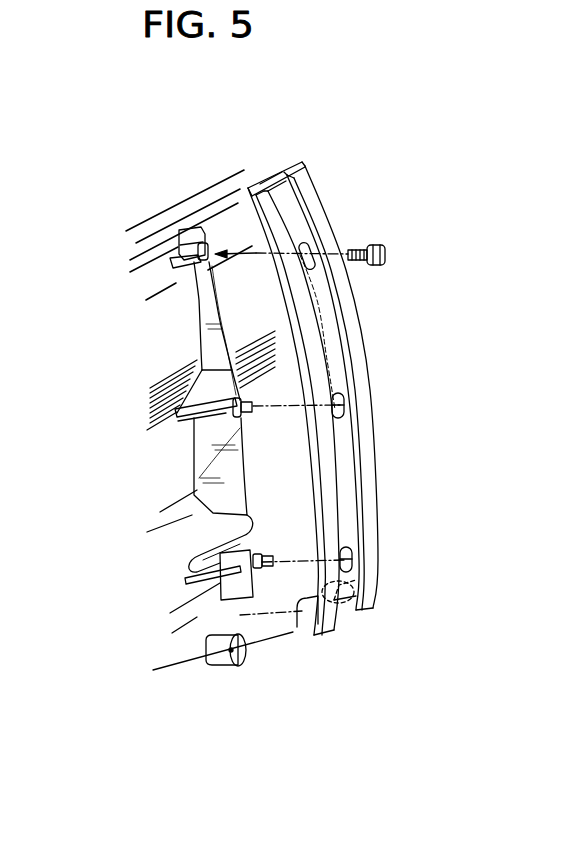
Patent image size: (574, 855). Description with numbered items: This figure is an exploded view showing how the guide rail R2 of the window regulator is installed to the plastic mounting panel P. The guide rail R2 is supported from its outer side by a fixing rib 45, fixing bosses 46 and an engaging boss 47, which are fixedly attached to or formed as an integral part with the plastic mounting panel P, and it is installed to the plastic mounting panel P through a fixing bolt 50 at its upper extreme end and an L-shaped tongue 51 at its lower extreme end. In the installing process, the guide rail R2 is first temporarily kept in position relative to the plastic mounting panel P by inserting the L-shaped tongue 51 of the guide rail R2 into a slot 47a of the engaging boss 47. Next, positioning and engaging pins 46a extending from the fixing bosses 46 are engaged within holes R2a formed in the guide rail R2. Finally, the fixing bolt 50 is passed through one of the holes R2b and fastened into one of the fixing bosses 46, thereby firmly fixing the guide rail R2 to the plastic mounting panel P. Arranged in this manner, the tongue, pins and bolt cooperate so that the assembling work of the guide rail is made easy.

The plastic mounting panel P is at (197, 202).
The guide rail R2 is at (312, 182).
The holes R2a is at (345, 402).
The holes R2b is at (308, 250).
The fixing rib 45 is at (217, 350).
The fixing boss 46 is at (190, 287).
The positioning and engaging pin 46a is at (198, 510).
The engaging boss 47 is at (244, 662).
The slot 47a is at (232, 662).
The fixing bolt 50 is at (386, 254).
The L-shaped tongue 51 is at (303, 605).